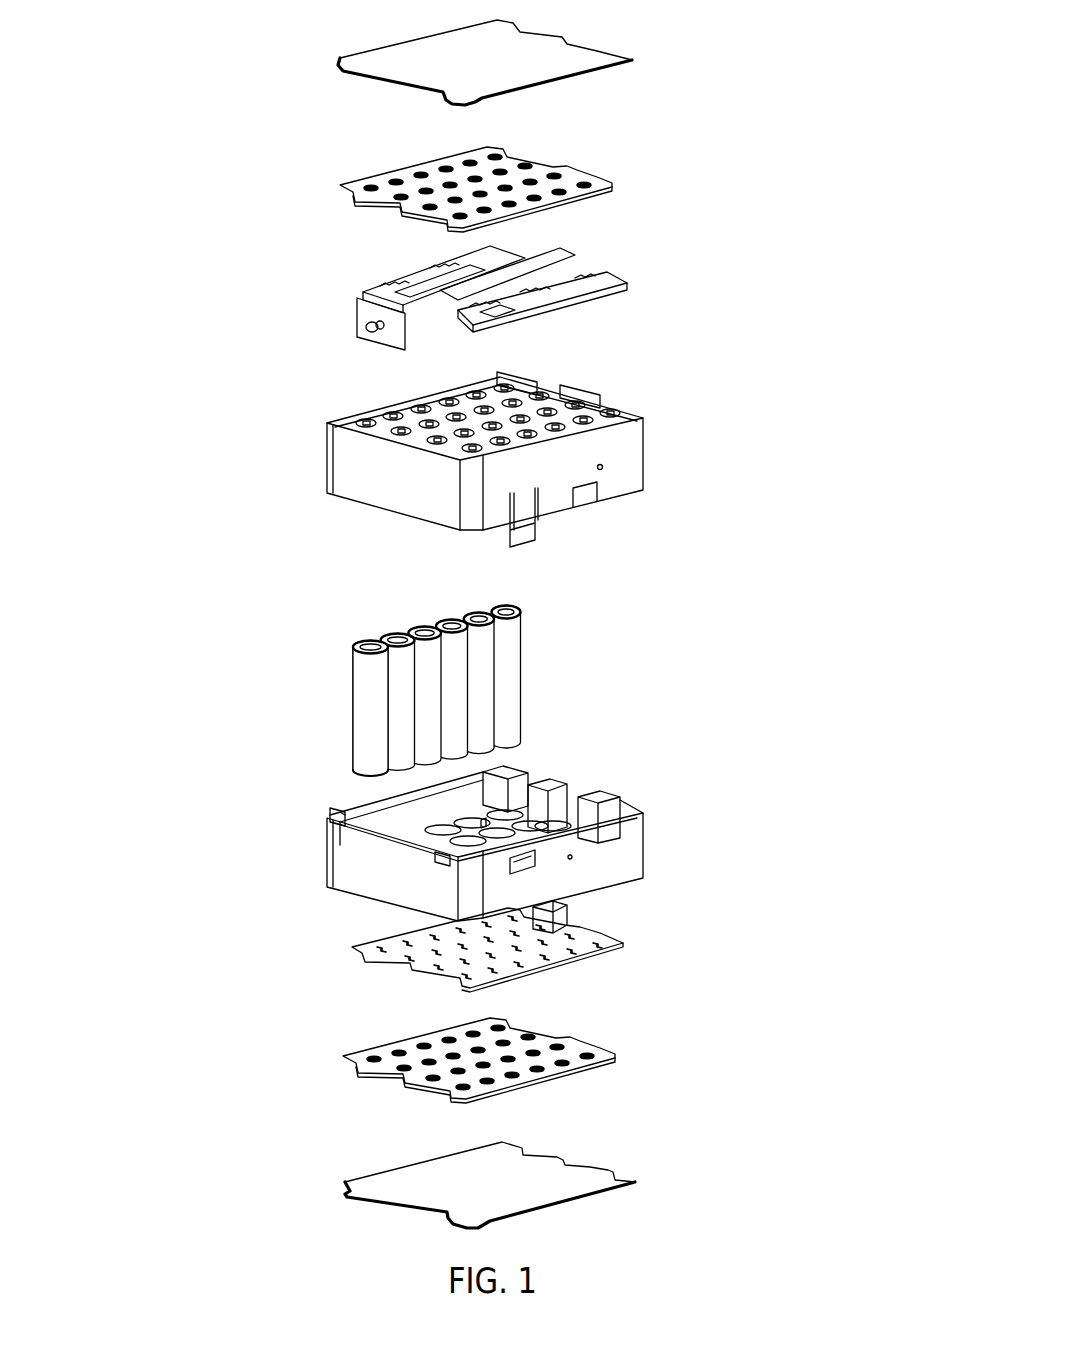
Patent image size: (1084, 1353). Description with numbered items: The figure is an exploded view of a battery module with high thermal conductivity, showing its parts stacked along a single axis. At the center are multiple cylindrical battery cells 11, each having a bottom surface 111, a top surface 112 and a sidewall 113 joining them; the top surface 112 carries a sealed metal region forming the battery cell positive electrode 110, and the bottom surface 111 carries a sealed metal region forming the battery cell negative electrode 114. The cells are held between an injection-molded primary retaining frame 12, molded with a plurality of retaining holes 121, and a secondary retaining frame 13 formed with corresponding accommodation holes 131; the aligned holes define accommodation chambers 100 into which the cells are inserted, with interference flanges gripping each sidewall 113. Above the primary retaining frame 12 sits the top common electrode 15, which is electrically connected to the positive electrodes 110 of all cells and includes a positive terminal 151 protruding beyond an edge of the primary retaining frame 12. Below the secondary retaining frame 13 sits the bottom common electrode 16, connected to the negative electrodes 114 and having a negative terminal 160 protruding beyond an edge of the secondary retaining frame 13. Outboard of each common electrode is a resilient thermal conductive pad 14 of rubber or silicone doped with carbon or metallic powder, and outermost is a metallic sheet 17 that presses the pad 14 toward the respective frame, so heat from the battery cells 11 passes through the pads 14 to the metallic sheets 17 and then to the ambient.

The accommodation chamber 100 is at (481, 694).
The battery cell 11 is at (328, 695).
The battery cell positive electrode 110 is at (361, 641).
The bottom surface 111 is at (353, 767).
The top surface 112 is at (353, 647).
The sidewall 113 is at (358, 710).
The battery cell negative electrode 114 is at (362, 783).
The primary retaining frame 12 is at (447, 516).
The retaining hole 121 is at (563, 437).
The secondary retaining frame 13 is at (441, 848).
The accommodation hole 131 is at (527, 832).
The thermal conductive pad 14 is at (600, 177).
The top common electrode 15 is at (491, 278).
The positive terminal 151 is at (368, 320).
The bottom common electrode 16 is at (608, 938).
The negative terminal 160 is at (567, 905).
The metallic sheet 17 is at (588, 53).